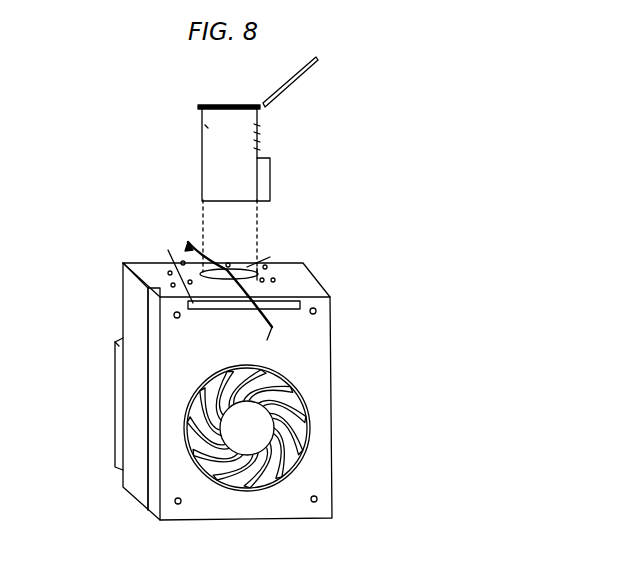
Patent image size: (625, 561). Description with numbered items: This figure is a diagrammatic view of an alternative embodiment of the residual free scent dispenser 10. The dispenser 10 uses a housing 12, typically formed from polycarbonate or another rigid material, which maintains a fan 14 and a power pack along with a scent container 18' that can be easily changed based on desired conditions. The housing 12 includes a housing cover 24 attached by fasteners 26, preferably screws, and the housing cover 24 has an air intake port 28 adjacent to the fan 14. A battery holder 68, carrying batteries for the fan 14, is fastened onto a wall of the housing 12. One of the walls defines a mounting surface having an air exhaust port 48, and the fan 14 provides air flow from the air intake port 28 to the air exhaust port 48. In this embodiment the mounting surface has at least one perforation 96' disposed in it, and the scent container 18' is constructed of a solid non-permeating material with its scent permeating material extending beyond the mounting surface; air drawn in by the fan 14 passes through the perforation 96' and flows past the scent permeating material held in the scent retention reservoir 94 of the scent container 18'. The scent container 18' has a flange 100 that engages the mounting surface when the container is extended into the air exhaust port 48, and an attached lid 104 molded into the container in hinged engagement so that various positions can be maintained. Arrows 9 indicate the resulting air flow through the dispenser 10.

The residual free scent dispenser 10 is at (113, 248).
The housing 12 is at (135, 299).
The fan 14 is at (263, 429).
The scent container 18' is at (153, 82).
The housing cover 24 is at (167, 426).
The fasteners 26 is at (174, 315).
The air intake port 28 is at (307, 445).
The air exhaust port 48 is at (276, 278).
The battery holder 68 is at (115, 363).
The scent retention reservoir 94 is at (271, 178).
The perforation 96' is at (302, 250).
The flange 100 is at (200, 110).
The lid 104 is at (293, 87).
The air flow 9 is at (223, 300).